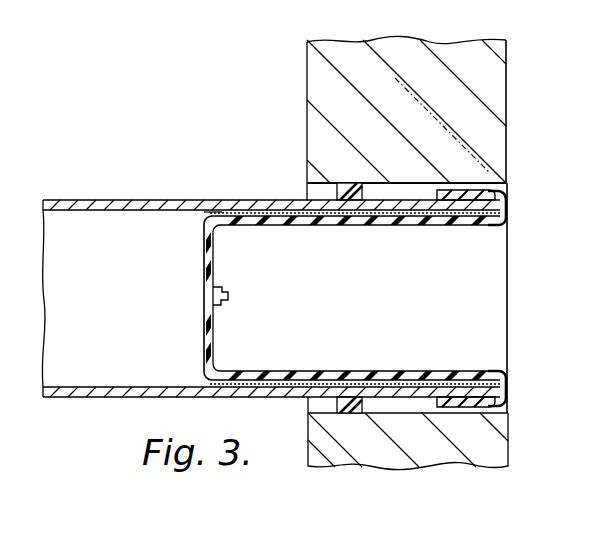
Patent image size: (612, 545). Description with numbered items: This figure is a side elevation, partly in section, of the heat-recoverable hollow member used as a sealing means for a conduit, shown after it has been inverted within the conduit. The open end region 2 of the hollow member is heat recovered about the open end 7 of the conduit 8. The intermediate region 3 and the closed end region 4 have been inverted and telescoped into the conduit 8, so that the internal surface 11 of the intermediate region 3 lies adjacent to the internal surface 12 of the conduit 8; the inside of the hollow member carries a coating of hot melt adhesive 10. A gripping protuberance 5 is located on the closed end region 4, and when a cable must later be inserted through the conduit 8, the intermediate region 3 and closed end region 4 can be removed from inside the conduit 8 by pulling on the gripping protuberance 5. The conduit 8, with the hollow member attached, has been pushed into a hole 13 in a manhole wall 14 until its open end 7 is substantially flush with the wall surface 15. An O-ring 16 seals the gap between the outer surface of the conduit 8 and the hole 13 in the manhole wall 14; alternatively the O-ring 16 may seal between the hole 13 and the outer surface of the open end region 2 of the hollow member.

The open end region 2 is at (499, 196).
The intermediate region 3 is at (408, 223).
The closed end region 4 is at (213, 252).
The gripping protuberance 5 is at (227, 291).
The open end 7 is at (505, 224).
The conduit 8 is at (247, 205).
The hot melt adhesive 10 is at (222, 215).
The internal surface 11 is at (381, 220).
The internal surface 12 is at (285, 211).
The hole 13 is at (477, 190).
The manhole wall 14 is at (340, 98).
The wall surface 15 is at (506, 126).
The O-ring 16 is at (347, 184).